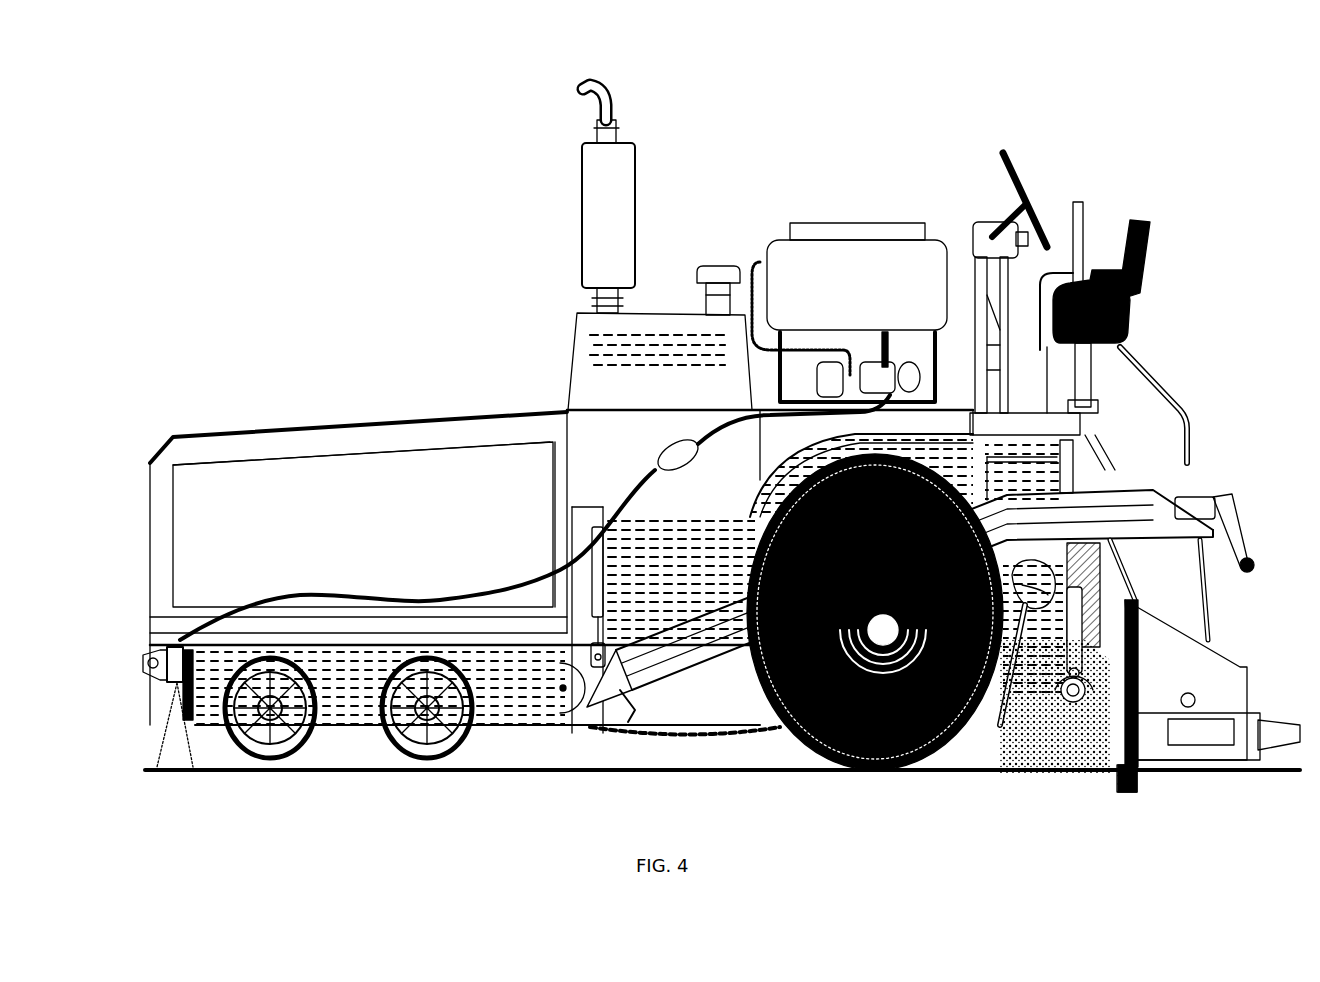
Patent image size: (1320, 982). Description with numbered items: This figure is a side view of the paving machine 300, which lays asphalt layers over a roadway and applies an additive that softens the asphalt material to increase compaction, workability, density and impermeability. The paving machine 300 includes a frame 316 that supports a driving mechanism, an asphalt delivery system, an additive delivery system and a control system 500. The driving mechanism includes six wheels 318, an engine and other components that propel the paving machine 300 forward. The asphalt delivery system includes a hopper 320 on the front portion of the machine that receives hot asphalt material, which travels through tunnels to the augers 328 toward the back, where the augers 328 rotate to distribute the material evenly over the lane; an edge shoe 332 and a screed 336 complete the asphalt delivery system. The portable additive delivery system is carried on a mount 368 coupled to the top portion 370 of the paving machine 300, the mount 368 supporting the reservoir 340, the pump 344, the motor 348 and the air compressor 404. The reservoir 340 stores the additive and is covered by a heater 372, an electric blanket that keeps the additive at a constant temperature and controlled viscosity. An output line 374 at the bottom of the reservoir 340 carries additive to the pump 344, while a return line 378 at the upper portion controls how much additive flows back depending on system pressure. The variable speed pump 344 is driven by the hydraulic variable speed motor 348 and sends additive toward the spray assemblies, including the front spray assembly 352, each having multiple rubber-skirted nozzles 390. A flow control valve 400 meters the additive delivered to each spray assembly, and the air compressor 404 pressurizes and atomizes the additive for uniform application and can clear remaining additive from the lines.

The paving machine 300 is at (722, 438).
The control system 500 is at (1053, 198).
The frame 316 is at (1110, 463).
The wheels 318 is at (270, 772).
The hopper 320 is at (222, 490).
The augers 328 is at (1095, 700).
The edge shoe 332 is at (1135, 792).
The screed 336 is at (1173, 675).
The reservoir 340 is at (783, 258).
The pump 344 is at (877, 362).
The motor 348 is at (912, 362).
The front spray assembly 352 is at (163, 665).
The mount 368 is at (933, 390).
The top portion 370 is at (953, 407).
The heater 372 is at (816, 223).
The output line 374 is at (888, 362).
The return line 378 is at (753, 260).
The nozzles 390 is at (178, 705).
The flow control valve 400 is at (672, 468).
The air compressor 404 is at (815, 380).